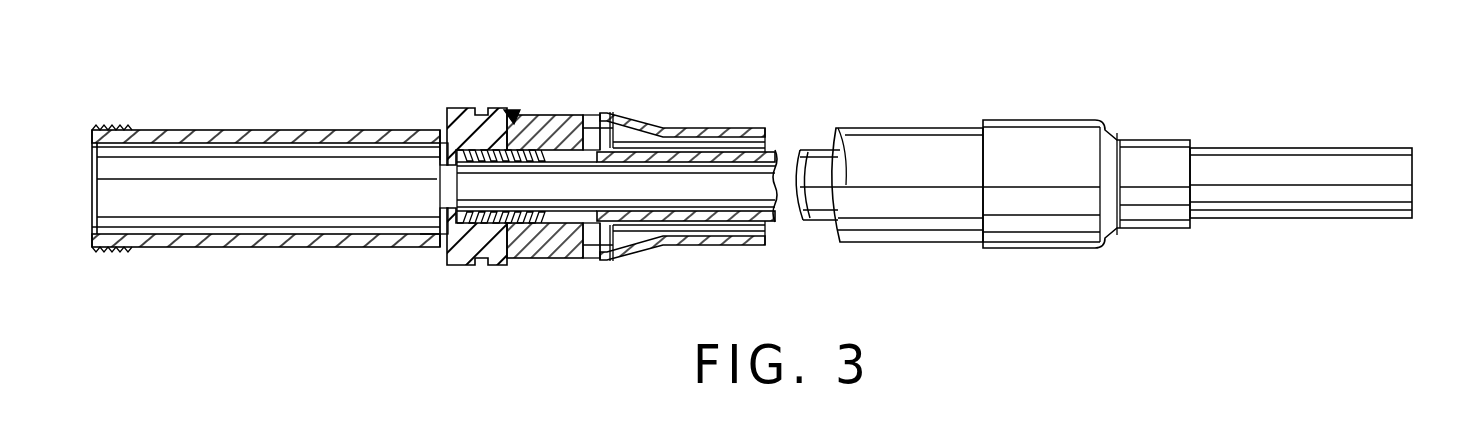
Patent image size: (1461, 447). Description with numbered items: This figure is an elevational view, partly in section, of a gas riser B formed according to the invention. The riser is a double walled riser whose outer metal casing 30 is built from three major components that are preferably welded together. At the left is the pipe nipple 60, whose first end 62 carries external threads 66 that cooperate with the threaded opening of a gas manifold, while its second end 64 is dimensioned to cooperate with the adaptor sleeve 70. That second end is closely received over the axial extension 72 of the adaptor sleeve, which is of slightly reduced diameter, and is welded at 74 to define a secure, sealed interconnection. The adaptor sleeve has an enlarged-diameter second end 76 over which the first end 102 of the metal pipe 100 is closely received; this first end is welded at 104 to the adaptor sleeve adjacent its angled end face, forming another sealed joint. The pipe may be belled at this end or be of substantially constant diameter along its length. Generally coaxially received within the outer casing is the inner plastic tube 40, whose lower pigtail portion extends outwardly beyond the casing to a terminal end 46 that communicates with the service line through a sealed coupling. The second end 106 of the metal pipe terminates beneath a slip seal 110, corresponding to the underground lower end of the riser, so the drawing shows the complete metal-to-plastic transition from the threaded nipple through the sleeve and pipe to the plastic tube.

The outer metal casing 30 is at (851, 116).
The inner plastic tube 40 is at (642, 229).
The terminal end 46 is at (1412, 175).
The pipe nipple 60 is at (291, 132).
The first end of pipe nipple 62 is at (92, 218).
The second end of pipe nipple 64 is at (439, 131).
The external threads 66 is at (118, 128).
The adaptor sleeve 70 is at (457, 256).
The axial extension 72 is at (440, 217).
The weld 74 is at (439, 245).
The second end of adaptor sleeve 76 is at (569, 130).
The metal pipe 100 is at (639, 120).
The first end of metal pipe 102 is at (522, 118).
The weld 104 is at (512, 259).
The second end of metal pipe 106 is at (1060, 150).
The slip seal 110 is at (981, 121).
The gas riser B is at (876, 93).